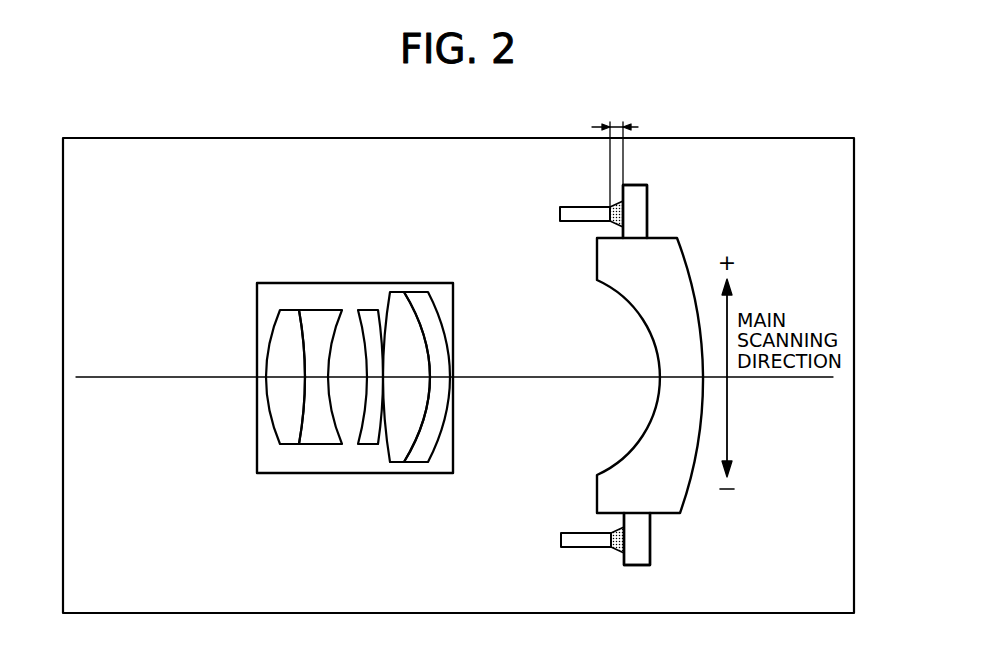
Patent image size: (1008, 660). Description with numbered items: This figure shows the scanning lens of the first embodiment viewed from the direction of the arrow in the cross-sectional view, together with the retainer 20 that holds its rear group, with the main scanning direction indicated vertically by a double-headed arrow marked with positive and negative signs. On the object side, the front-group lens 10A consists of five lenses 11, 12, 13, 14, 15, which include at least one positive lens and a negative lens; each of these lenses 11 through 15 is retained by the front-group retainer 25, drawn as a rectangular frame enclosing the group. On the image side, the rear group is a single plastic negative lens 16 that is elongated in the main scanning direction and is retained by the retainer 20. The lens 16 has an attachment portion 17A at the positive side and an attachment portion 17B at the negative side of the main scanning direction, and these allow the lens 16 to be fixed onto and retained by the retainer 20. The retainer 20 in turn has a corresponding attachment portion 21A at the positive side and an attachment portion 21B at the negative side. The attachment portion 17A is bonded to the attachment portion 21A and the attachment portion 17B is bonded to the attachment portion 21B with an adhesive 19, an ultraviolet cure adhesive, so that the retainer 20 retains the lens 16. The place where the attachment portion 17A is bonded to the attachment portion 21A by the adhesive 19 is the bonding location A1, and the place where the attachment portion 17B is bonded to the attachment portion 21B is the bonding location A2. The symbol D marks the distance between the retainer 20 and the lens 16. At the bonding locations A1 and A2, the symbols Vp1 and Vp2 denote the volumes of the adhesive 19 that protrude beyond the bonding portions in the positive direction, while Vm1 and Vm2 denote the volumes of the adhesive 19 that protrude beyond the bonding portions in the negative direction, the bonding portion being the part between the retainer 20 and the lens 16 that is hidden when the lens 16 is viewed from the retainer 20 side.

The front-group lens 10A is at (280, 244).
The lens 11 is at (290, 316).
The lens 12 is at (322, 316).
The lens 13 is at (370, 318).
The lens 14 is at (400, 306).
The lens 15 is at (422, 304).
The lens 16 is at (687, 248).
The attachment portion 17A is at (640, 185).
The attachment portion 17B is at (638, 567).
The adhesive 19 is at (608, 213).
The retainer 20 is at (793, 138).
The attachment portion 21A is at (560, 213).
The attachment portion 21B is at (562, 535).
The front-group retainer 25 is at (257, 323).
The distance D is at (615, 153).
The bonding location A1 is at (565, 184).
The bonding location A2 is at (559, 566).
The adhesive volume protruding in positive direction Vp1 is at (613, 202).
The adhesive volume protruding in negative direction Vm1 is at (613, 227).
The adhesive volume protruding in positive direction Vp2 is at (620, 528).
The adhesive volume protruding in negative direction Vm2 is at (620, 550).